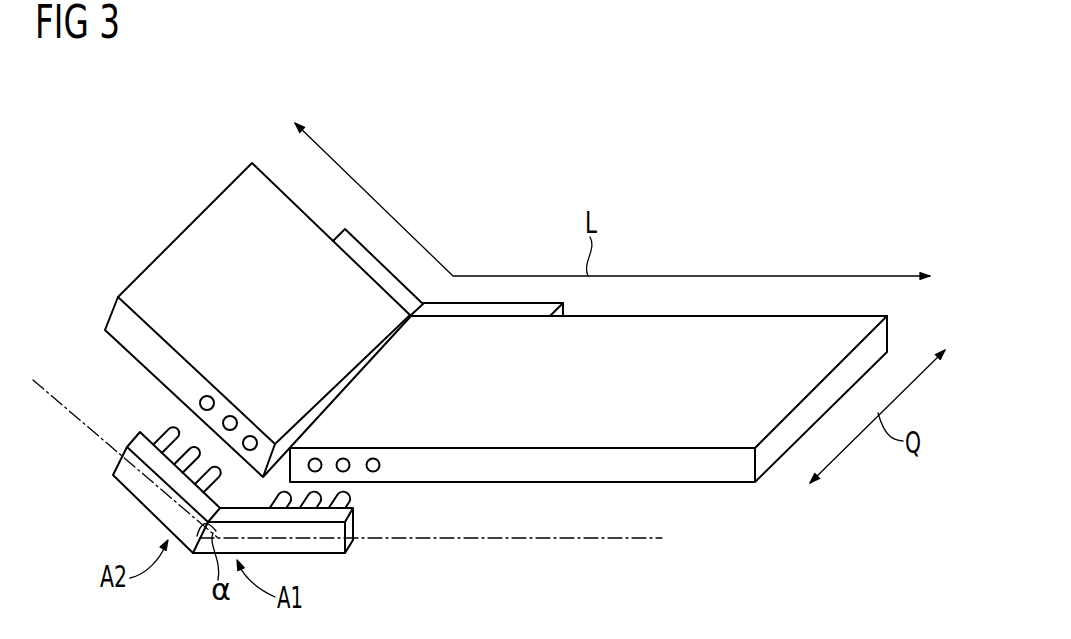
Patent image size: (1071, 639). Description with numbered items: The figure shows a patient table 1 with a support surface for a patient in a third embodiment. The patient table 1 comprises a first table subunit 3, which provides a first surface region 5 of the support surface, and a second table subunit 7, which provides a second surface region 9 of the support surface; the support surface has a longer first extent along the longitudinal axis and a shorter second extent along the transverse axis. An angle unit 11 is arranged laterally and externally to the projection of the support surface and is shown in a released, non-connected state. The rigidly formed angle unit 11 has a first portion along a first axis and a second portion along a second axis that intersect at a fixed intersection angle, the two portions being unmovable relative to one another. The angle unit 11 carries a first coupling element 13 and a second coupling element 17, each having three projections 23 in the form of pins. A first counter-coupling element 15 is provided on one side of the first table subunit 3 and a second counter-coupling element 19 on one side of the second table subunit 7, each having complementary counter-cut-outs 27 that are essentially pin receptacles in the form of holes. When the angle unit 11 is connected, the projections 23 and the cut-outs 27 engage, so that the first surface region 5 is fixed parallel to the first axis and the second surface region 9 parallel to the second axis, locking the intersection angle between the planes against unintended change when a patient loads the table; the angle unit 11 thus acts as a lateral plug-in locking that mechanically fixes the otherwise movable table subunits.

The patient table 1 is at (677, 150).
The first table subunit 3 is at (704, 483).
The first surface region 5 is at (610, 428).
The second table subunit 7 is at (204, 209).
The second surface region 9 is at (190, 248).
The angle unit 11 is at (513, 302).
The first coupling element 13 is at (363, 500).
The first counter-coupling element 15 is at (392, 462).
The second coupling element 17 is at (157, 427).
The second counter-coupling element 19 is at (198, 390).
The projections 23 is at (212, 483).
The counter-cut-outs 27 is at (236, 418).